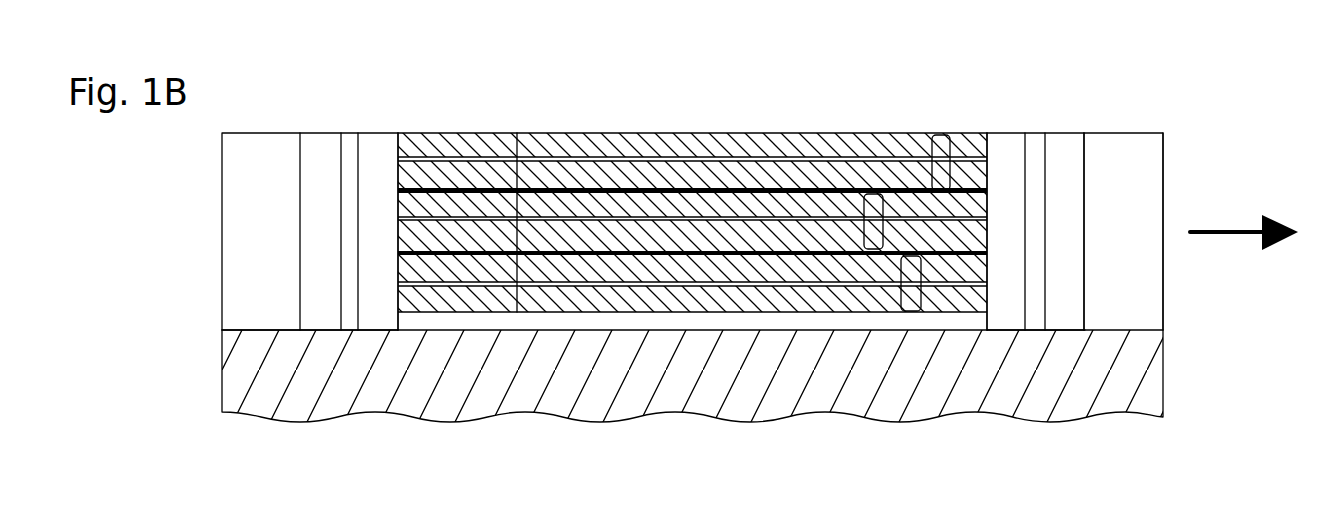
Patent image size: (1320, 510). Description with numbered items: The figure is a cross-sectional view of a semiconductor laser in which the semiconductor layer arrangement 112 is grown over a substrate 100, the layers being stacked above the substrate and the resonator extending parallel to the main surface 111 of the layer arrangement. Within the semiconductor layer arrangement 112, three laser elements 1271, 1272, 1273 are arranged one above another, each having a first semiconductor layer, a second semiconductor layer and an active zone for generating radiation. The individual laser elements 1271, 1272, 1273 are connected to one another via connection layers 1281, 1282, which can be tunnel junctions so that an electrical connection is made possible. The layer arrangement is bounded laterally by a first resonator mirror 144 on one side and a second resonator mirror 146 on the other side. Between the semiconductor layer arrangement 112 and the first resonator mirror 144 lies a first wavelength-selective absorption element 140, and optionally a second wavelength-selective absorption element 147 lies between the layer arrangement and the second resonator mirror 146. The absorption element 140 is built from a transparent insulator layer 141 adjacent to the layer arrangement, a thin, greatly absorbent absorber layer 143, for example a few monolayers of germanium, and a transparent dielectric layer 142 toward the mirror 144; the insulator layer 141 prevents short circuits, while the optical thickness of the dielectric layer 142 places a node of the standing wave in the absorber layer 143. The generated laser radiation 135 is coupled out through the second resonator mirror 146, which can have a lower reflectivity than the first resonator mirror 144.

The substrate 100 is at (1163, 377).
The main surface 111 is at (571, 133).
The semiconductor layer arrangement 112 is at (517, 181).
The first laser element 1271 is at (912, 311).
The second laser element 1272 is at (880, 194).
The third laser element 1273 is at (945, 136).
The first connection layer 1281 is at (698, 252).
The second connection layer 1282 is at (629, 188).
The laser radiation 135 is at (1230, 230).
The first wavelength-selective absorption element 140 is at (300, 428).
The transparent insulator layer 141 is at (379, 146).
The transparent dielectric layer 142 is at (321, 146).
The absorber layer 143 is at (351, 145).
The first resonator mirror 144 is at (262, 146).
The second resonator mirror 146 is at (1125, 148).
The second wavelength-selective absorption element 147 is at (987, 126).